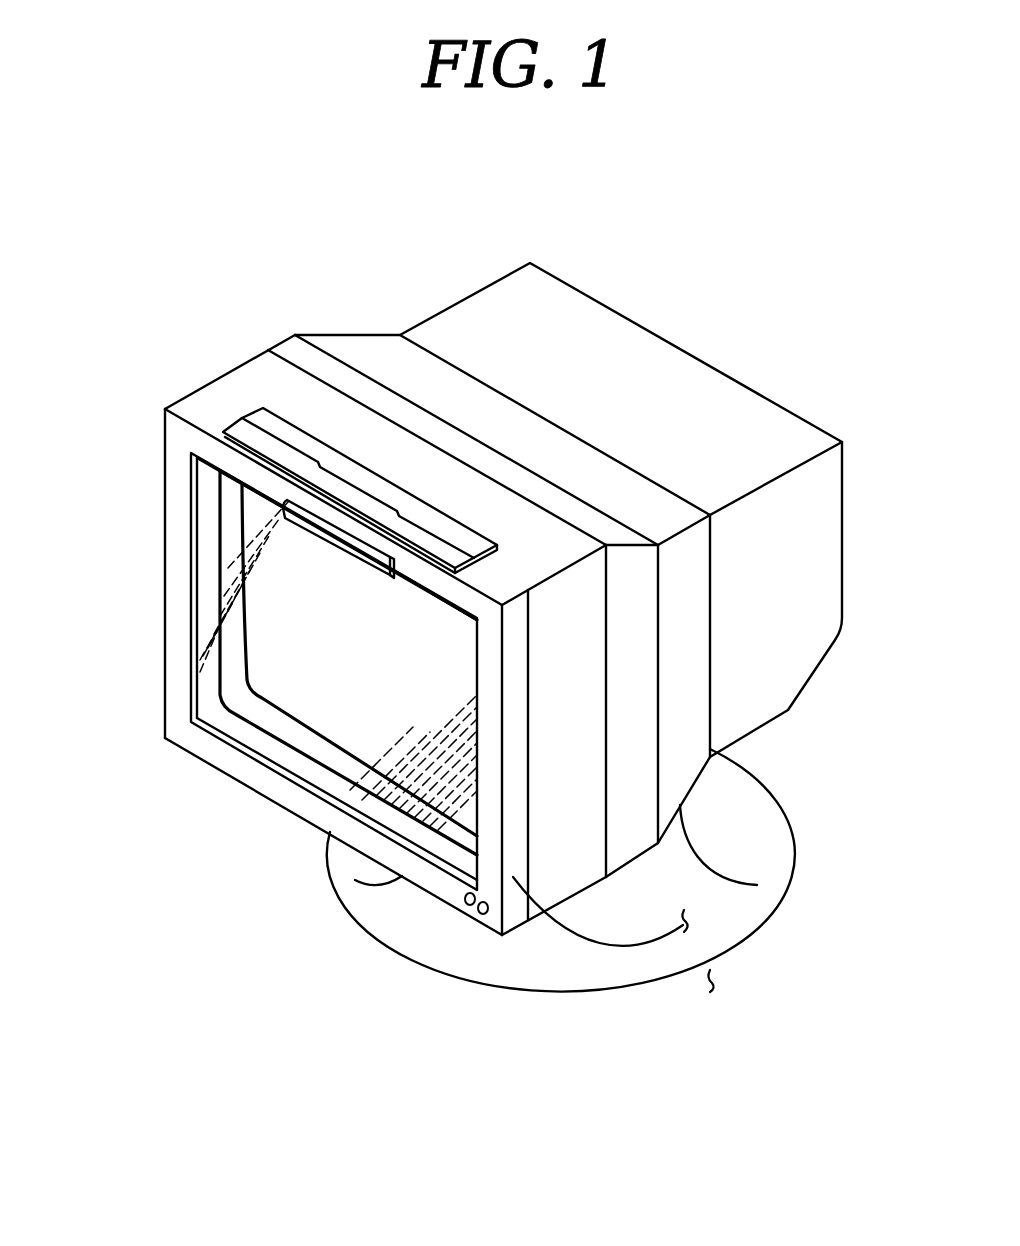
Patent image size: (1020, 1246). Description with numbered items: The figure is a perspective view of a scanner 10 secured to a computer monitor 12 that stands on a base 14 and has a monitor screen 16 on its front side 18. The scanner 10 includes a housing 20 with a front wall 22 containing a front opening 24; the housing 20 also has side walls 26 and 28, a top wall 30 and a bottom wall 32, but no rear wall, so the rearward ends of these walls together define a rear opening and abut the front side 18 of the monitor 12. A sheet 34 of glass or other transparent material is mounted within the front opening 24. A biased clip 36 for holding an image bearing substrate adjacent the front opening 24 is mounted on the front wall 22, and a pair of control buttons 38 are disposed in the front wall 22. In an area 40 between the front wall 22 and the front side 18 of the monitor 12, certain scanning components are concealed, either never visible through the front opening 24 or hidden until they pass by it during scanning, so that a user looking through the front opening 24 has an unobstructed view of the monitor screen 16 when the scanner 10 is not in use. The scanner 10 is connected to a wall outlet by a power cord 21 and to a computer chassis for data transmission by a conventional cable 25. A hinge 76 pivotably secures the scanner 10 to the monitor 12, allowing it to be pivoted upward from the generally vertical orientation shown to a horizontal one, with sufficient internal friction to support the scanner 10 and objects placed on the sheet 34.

The scanner 10 is at (233, 328).
The computer monitor 12 is at (763, 445).
The base 14 is at (727, 858).
The monitor screen 16 is at (310, 585).
The front side 18 is at (317, 780).
The housing 20 is at (212, 418).
The power cord 21 is at (680, 988).
The front wall 22 is at (173, 725).
The front opening 24 is at (240, 753).
The cable 25 is at (687, 924).
The side wall 26 is at (162, 626).
The side wall 28 is at (513, 822).
The top wall 30 is at (495, 587).
The bottom wall 32 is at (332, 872).
The sheet 34 is at (248, 560).
The biased clip 36 is at (300, 525).
The control buttons 38 is at (480, 908).
The area 40 is at (191, 673).
The hinge 76 is at (398, 493).